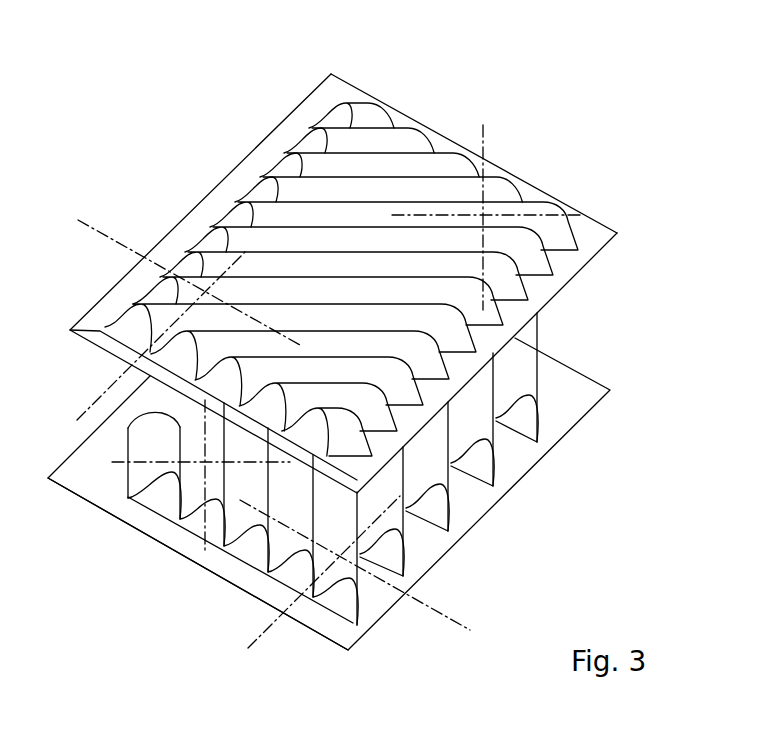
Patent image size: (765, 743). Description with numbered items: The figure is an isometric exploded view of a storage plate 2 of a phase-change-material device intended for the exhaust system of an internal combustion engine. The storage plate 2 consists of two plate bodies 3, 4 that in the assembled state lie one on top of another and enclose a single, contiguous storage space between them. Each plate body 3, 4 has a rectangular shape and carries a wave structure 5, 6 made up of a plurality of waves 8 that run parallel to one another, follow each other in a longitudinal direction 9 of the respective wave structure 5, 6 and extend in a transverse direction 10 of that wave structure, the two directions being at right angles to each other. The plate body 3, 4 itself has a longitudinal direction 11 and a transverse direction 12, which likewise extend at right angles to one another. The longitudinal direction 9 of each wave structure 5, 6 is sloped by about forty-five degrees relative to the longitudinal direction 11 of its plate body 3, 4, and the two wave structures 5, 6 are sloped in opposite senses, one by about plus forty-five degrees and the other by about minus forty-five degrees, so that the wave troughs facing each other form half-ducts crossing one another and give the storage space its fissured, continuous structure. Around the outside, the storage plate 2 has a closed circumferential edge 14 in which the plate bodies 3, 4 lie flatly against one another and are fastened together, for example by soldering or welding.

The storage plate 2 is at (605, 150).
The plate body 3 is at (394, 109).
The plate body 4 is at (577, 368).
The wave structure 5 is at (409, 177).
The wave structure 6 is at (504, 385).
The waves 8 is at (317, 167).
The longitudinal direction of the wave structure 9 is at (501, 170).
The transverse direction of the wave structure 10 is at (549, 195).
The longitudinal direction of the plate body 11 is at (104, 384).
The transverse direction of the plate body 12 is at (143, 257).
The circumferential edge 14 is at (214, 207).